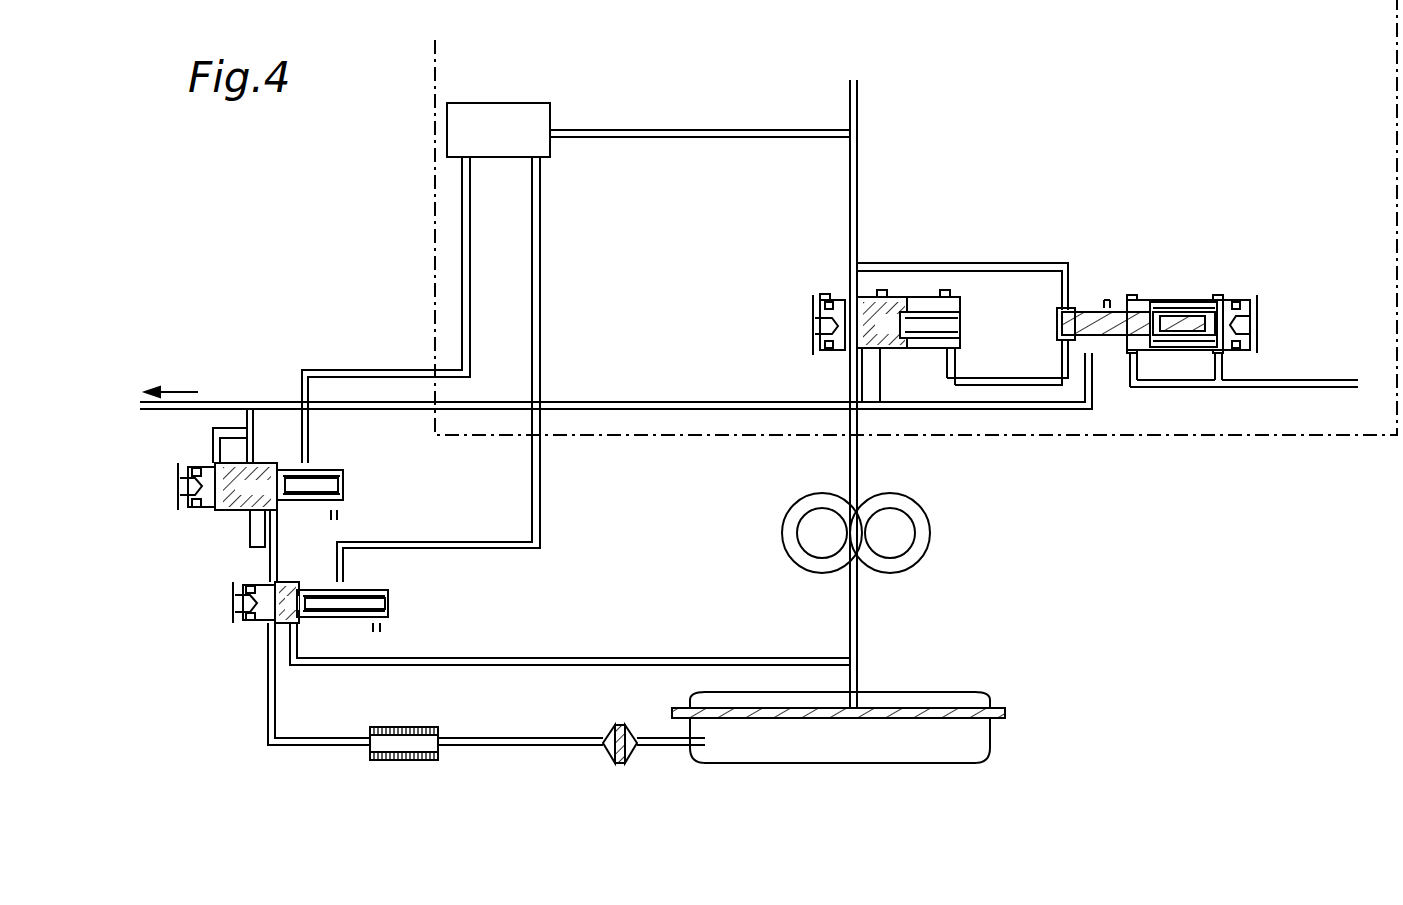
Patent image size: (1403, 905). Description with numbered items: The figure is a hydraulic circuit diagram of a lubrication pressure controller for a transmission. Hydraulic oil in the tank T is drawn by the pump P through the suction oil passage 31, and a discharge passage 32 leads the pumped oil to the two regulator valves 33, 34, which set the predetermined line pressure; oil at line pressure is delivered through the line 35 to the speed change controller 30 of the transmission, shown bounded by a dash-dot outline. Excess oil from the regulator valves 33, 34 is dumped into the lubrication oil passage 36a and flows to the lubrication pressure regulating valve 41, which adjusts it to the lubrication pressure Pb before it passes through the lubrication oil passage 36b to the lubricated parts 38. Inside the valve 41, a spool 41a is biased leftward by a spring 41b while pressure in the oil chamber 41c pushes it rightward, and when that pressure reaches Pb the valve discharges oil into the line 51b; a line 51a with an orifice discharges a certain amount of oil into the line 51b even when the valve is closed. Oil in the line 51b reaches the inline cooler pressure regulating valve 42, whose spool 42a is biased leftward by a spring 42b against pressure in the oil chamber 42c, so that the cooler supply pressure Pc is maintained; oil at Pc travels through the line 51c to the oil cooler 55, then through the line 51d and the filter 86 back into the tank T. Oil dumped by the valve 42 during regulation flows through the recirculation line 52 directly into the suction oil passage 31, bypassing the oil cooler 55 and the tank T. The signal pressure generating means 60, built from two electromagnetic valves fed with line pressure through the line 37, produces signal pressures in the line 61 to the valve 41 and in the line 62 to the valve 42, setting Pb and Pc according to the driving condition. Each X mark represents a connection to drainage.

The speed change controller 30 is at (1155, 440).
The suction oil passage 31 is at (857, 612).
The discharge pipe 32 is at (857, 455).
The regulator valve 33 is at (803, 268).
The regulator valve 34 is at (1157, 283).
The line 35 is at (857, 170).
The lubrication oil passage 36a is at (662, 402).
The lubrication oil passage 36b is at (150, 409).
The line 37 is at (668, 130).
The lubricated parts 38 is at (169, 360).
The lubrication pressure regulating valve 41 is at (292, 505).
The spool 41a is at (248, 510).
The spring 41b is at (345, 490).
The oil chamber 41c is at (217, 502).
The cooler pressure regulating valve 42 is at (343, 630).
The spool 42a is at (323, 614).
The spring 42b is at (390, 608).
The oil chamber 42c is at (262, 626).
The line with an orifice 51a is at (250, 533).
The line 51b is at (278, 530).
The line 51c is at (268, 738).
The return pipe to tank 51d is at (545, 745).
The recirculation line 52 is at (570, 658).
The oil cooler 55 is at (395, 760).
The signal pressure generating means 60 is at (507, 103).
The line 61 is at (367, 313).
The line 62 is at (543, 472).
The filter 86 is at (620, 725).
The pump P is at (930, 513).
The tank T is at (975, 697).